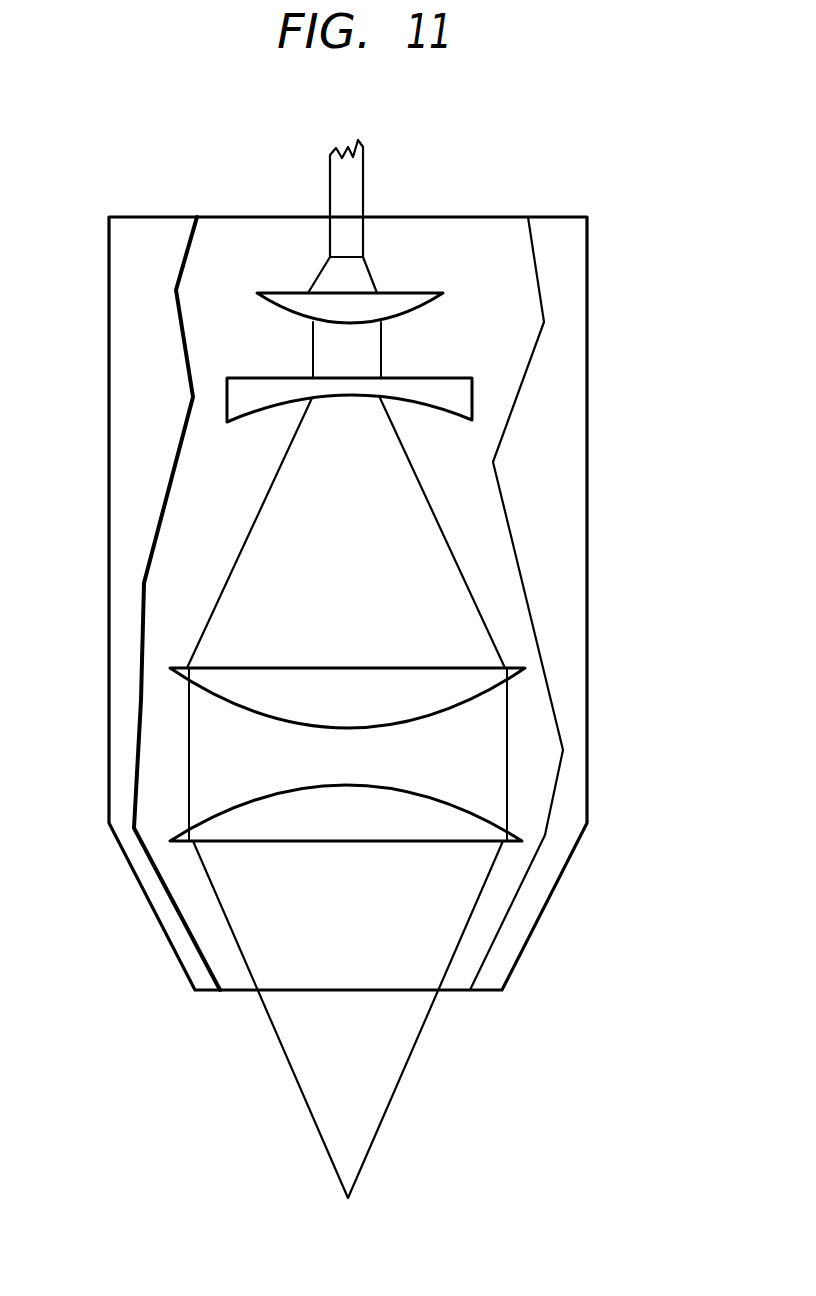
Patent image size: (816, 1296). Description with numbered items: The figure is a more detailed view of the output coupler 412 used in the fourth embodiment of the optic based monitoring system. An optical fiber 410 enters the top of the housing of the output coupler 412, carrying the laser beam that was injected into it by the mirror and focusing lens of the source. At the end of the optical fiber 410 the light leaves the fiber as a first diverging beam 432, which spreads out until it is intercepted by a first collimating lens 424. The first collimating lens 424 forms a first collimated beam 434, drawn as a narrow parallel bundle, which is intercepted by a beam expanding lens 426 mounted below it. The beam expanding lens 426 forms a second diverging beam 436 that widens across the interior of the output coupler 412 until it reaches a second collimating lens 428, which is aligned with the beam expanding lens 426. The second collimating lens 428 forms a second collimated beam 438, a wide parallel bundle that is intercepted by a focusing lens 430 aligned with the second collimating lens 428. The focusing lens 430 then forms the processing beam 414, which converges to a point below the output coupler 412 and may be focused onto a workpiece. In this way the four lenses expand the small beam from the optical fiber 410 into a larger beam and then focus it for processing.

The optical fiber 410 is at (363, 191).
The output coupler 412 is at (587, 557).
The processing beam 414 is at (398, 1086).
The first collimating lens 424 is at (400, 318).
The beam expanding lens 426 is at (430, 419).
The second collimating lens 428 is at (513, 680).
The focusing lens 430 is at (513, 833).
The first diverging beam 432 is at (372, 275).
The first collimated beam 434 is at (313, 347).
The second diverging beam 436 is at (258, 516).
The second collimated beam 438 is at (187, 732).